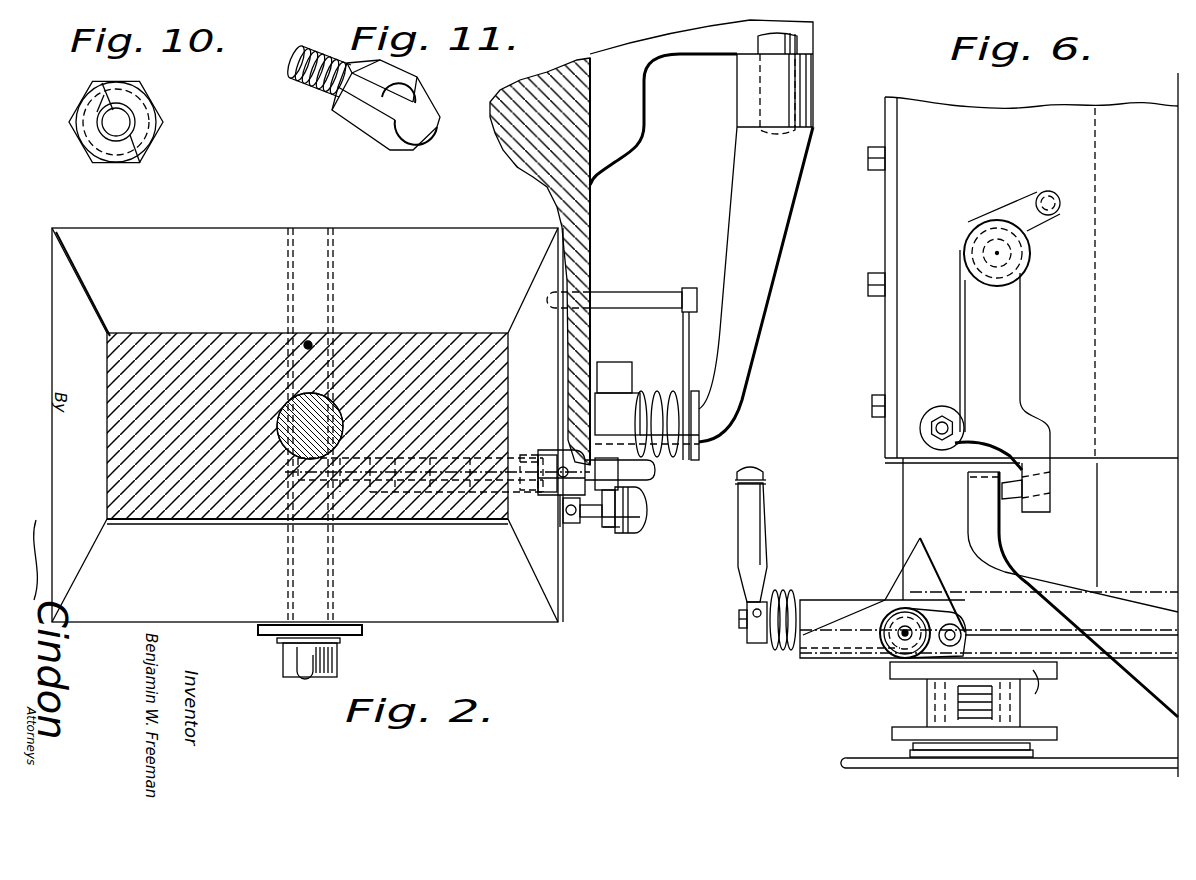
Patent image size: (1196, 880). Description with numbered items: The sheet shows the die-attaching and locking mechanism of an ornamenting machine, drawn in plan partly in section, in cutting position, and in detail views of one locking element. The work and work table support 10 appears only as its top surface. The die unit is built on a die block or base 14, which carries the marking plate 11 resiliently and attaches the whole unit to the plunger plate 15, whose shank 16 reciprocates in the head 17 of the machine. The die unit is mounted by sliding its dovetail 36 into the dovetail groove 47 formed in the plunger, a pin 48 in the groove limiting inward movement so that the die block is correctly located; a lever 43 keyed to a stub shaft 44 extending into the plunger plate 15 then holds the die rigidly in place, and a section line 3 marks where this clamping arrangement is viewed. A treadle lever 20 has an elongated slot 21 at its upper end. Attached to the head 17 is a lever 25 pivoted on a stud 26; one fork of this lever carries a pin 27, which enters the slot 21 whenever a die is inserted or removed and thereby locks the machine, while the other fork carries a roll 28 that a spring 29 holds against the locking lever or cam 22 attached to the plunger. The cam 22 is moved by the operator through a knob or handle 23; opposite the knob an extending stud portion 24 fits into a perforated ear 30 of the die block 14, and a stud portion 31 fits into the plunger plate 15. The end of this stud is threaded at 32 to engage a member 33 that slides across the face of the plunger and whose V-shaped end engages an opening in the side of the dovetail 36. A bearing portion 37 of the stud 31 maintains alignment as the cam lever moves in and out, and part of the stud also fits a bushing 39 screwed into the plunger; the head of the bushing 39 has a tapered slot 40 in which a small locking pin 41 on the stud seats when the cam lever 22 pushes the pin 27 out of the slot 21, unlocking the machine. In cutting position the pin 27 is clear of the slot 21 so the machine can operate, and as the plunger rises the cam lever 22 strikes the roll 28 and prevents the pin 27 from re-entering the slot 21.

In FIG. 2, the section line 3- 3 is at (316, 217).
In FIG. 6, the work and work table support 10 is at (845, 762).
In FIG. 6, the marking plate 11 is at (906, 748).
In FIG. 6, the die block 14 is at (1017, 710).
In FIG. 6, the plunger plate 15 is at (1063, 645).
In FIG. 2, the shank 16 is at (178, 508).
In FIG. 6, the shank 16 is at (1070, 377).
In FIG. 2, the head 17 is at (540, 178).
In FIG. 6, the head 17 is at (1067, 93).
In FIG. 2, the treadle lever 20 is at (775, 250).
In FIG. 6, the treadle lever 20 is at (1087, 617).
In FIG. 6, the elongated slot 21 is at (998, 498).
In FIG. 2, the locking lever or cam 22 is at (607, 532).
In FIG. 6, the locking lever or cam 22 is at (913, 573).
In FIG. 2, the knob or handle 23 is at (647, 506).
In FIG. 6, the knob or handle 23 is at (881, 632).
In FIG. 2, the extending stud portion 24 is at (592, 520).
In FIG. 6, the lever 25 is at (1000, 313).
In FIG. 2, the stud 26 is at (710, 437).
In FIG. 6, the stud 26 is at (1015, 258).
In FIG. 6, the pin 27 is at (1007, 498).
In FIG. 6, the roll 28 is at (937, 407).
In FIG. 2, the spring 29 is at (689, 341).
In FIG. 6, the spring 29 is at (960, 300).
In FIG. 2, the perforated ear 30 is at (562, 507).
In FIG. 6, the perforated ear 30 is at (890, 662).
In FIG. 6, the stud portion 31 is at (960, 633).
In FIG. 2, the threaded end 32 is at (460, 513).
In FIG. 2, the member 33 is at (263, 524).
In FIG. 2, the dovetail strip 36 is at (330, 563).
In FIG. 2, the bearing portion 37 is at (395, 513).
In FIG. 10, the bushing 39 is at (101, 118).
In FIG. 11, the bushing 39 is at (337, 113).
In FIG. 2, the bushing 39 is at (540, 495).
In FIG. 10, the tapered slot 40 is at (135, 143).
In FIG. 11, the tapered slot 40 is at (420, 135).
In FIG. 2, the tapered slot 40 is at (530, 450).
In FIG. 2, the locking pin 41 is at (545, 452).
In FIG. 2, the lever 43 is at (285, 668).
In FIG. 6, the lever 43 is at (748, 573).
In FIG. 2, the stub shaft 44 is at (308, 678).
In FIG. 6, the stub shaft 44 is at (747, 618).
In FIG. 6, the dovetail groove 47 is at (825, 657).
In FIG. 2, the pin 48 is at (320, 340).